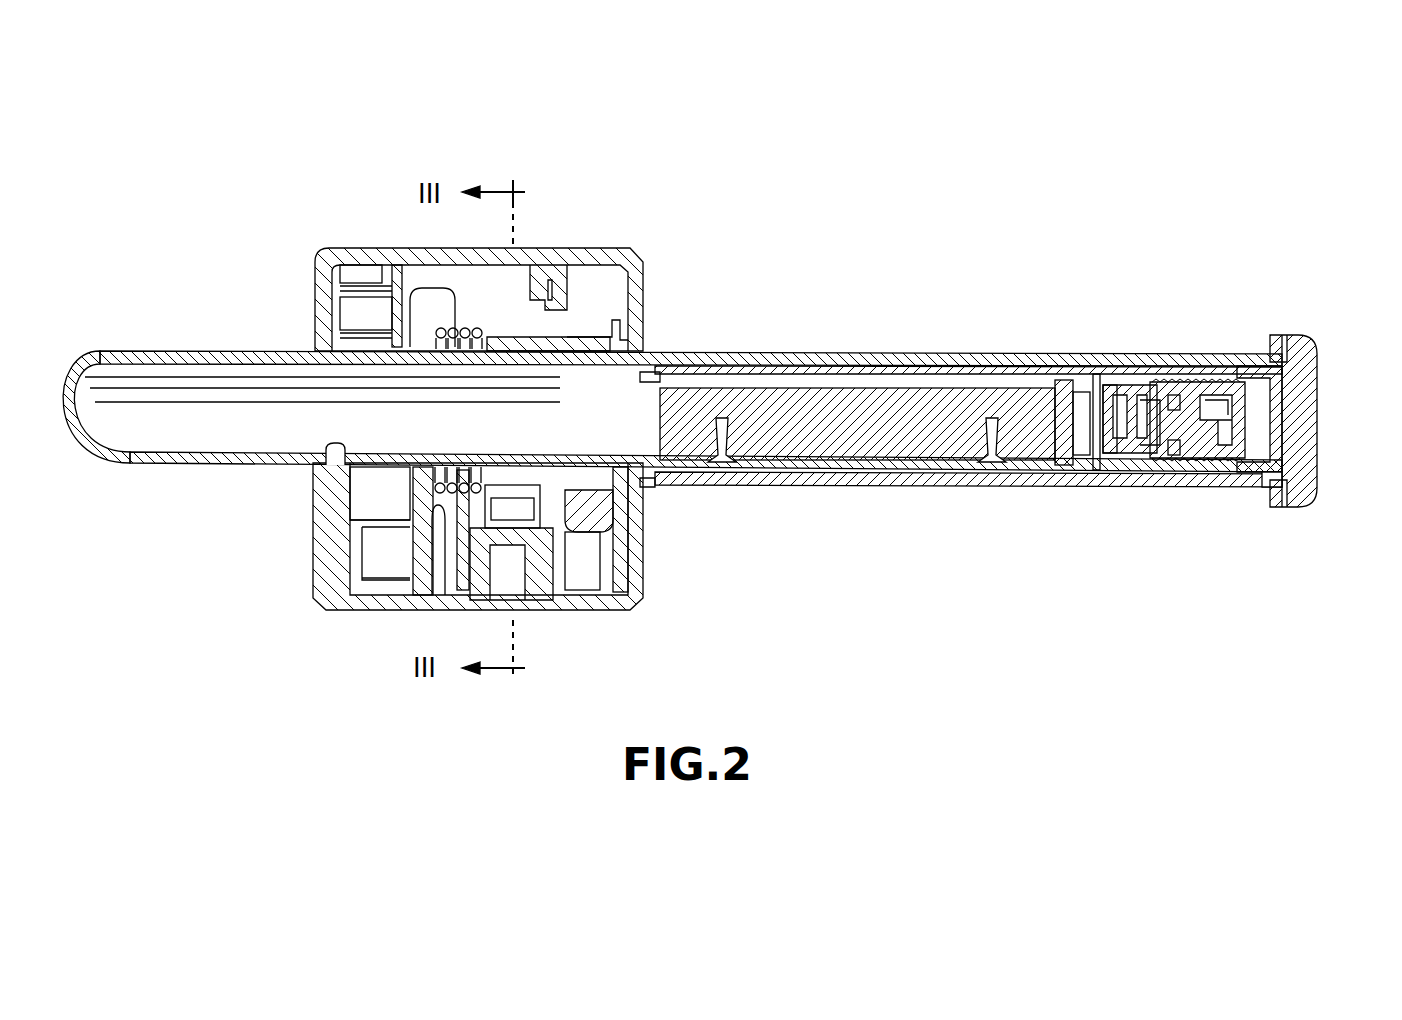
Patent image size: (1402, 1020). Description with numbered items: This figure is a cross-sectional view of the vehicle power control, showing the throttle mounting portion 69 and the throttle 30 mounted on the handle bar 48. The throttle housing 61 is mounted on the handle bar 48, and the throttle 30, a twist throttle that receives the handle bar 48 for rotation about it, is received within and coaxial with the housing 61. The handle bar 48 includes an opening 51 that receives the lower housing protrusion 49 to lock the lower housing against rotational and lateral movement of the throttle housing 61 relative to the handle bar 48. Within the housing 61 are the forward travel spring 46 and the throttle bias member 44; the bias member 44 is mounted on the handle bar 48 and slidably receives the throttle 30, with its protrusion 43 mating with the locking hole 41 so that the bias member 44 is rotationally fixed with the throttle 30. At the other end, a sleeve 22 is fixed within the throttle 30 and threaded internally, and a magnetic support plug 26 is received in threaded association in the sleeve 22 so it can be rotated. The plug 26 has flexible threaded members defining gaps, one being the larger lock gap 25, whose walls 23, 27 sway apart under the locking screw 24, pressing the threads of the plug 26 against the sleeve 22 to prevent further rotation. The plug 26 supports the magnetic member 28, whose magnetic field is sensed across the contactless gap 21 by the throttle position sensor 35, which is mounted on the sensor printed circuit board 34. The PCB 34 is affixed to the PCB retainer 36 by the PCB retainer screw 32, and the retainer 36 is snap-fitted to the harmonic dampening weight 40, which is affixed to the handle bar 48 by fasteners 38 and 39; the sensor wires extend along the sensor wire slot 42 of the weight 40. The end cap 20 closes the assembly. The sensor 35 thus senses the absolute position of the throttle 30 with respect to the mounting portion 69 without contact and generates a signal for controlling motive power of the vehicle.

The end cap 20 is at (1300, 432).
The contactless gap 21 is at (1105, 432).
The sleeve 22 is at (1272, 487).
The wall of the lock gap 23 is at (1195, 400).
The locking screw 24 is at (1258, 358).
The lock gap 25 is at (1215, 470).
The magnetic support plug 26 is at (1158, 442).
The wall of the lock gap 27 is at (1212, 400).
The magnetic member 28 is at (1128, 400).
The throttle 30 is at (795, 352).
The PCB retainer screw 32 is at (1080, 460).
The sensor printed circuit board 34 is at (1072, 395).
The throttle position sensor 35 is at (1108, 400).
The PCB retainer 36 is at (1062, 380).
The fastener 38 is at (990, 462).
The fastener 39 is at (712, 466).
The harmonic dampening weight 40 is at (848, 458).
The locking hole 41 is at (598, 490).
The sensor wire slot 42 is at (760, 380).
The protrusion 43 is at (590, 495).
The throttle bias member 44 is at (540, 345).
The forward travel spring 46 is at (455, 332).
The handle bar 48 is at (183, 463).
The lower housing protrusion 49 is at (332, 478).
The opening 51 is at (304, 466).
The throttle housing 61 is at (333, 597).
The throttle mounting portion 69 is at (222, 288).